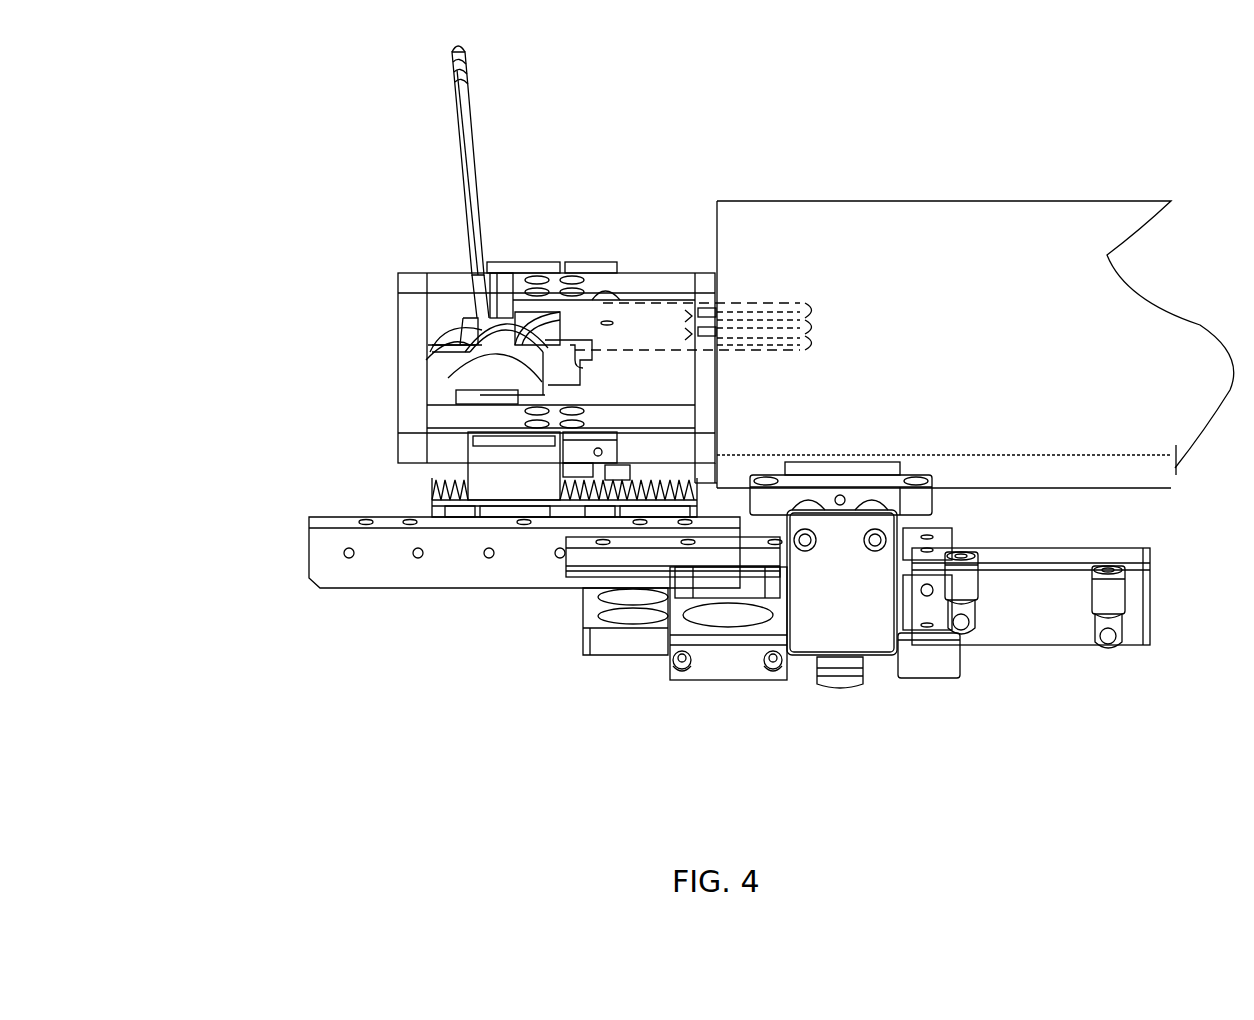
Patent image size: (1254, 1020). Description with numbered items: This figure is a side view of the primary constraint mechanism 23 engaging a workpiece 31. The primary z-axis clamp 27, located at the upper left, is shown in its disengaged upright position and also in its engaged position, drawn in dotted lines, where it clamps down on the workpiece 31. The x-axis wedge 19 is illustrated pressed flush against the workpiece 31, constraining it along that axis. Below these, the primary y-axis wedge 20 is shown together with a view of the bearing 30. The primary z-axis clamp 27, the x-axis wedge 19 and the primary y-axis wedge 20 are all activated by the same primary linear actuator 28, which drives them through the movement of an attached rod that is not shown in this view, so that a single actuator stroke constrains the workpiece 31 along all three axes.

The x-axis wedge 19 is at (655, 256).
The primary y-axis wedge 20 is at (662, 715).
The primary constraint mechanism 23 is at (178, 308).
The primary z-axis clamp 27 is at (382, 478).
The primary linear actuator 28 is at (1075, 672).
The bearing 30 is at (814, 690).
The workpiece 31 is at (928, 228).